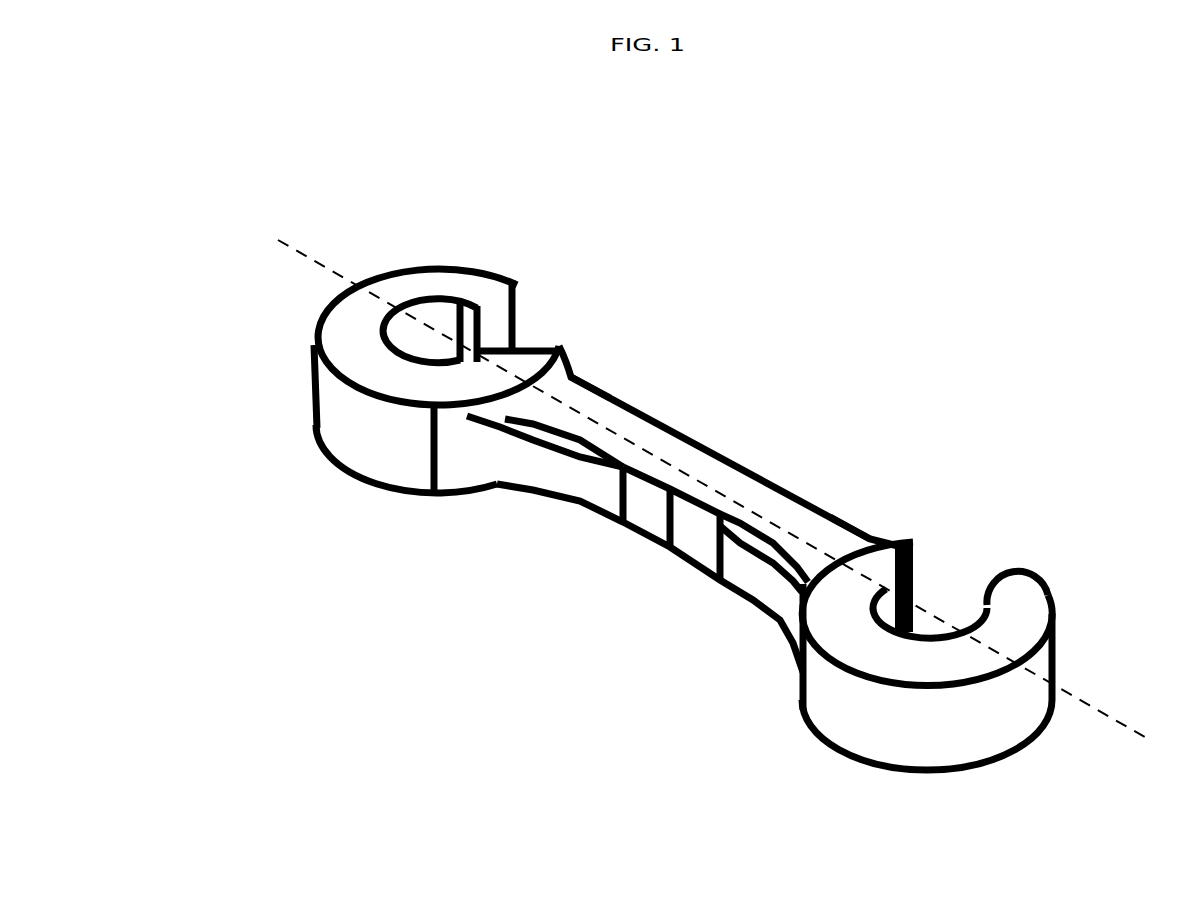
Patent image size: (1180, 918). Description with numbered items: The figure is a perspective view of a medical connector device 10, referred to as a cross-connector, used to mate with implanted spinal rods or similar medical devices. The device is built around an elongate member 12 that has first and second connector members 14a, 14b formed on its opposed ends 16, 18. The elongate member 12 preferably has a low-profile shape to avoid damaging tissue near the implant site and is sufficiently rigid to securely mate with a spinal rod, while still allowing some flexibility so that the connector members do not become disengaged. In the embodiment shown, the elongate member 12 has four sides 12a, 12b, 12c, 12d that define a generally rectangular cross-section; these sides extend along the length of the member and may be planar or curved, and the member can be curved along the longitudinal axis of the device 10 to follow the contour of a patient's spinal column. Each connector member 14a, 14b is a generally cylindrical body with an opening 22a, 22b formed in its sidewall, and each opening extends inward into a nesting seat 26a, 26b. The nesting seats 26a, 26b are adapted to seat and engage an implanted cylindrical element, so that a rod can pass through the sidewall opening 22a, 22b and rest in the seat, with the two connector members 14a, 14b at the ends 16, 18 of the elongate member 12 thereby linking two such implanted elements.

The medical connector device 10 is at (251, 141).
The elongate member 12 is at (568, 353).
The side 12a is at (595, 405).
The side 12b is at (583, 480).
The side 12c is at (858, 503).
The side 12d is at (704, 599).
The first connector member 14a is at (260, 423).
The second connector member 14b is at (770, 707).
The first end 16 is at (585, 351).
The second end 18 is at (881, 522).
The opening 22a is at (541, 313).
The opening 22b is at (940, 541).
The nesting seat 26a is at (433, 338).
The nesting seat 26b is at (922, 630).